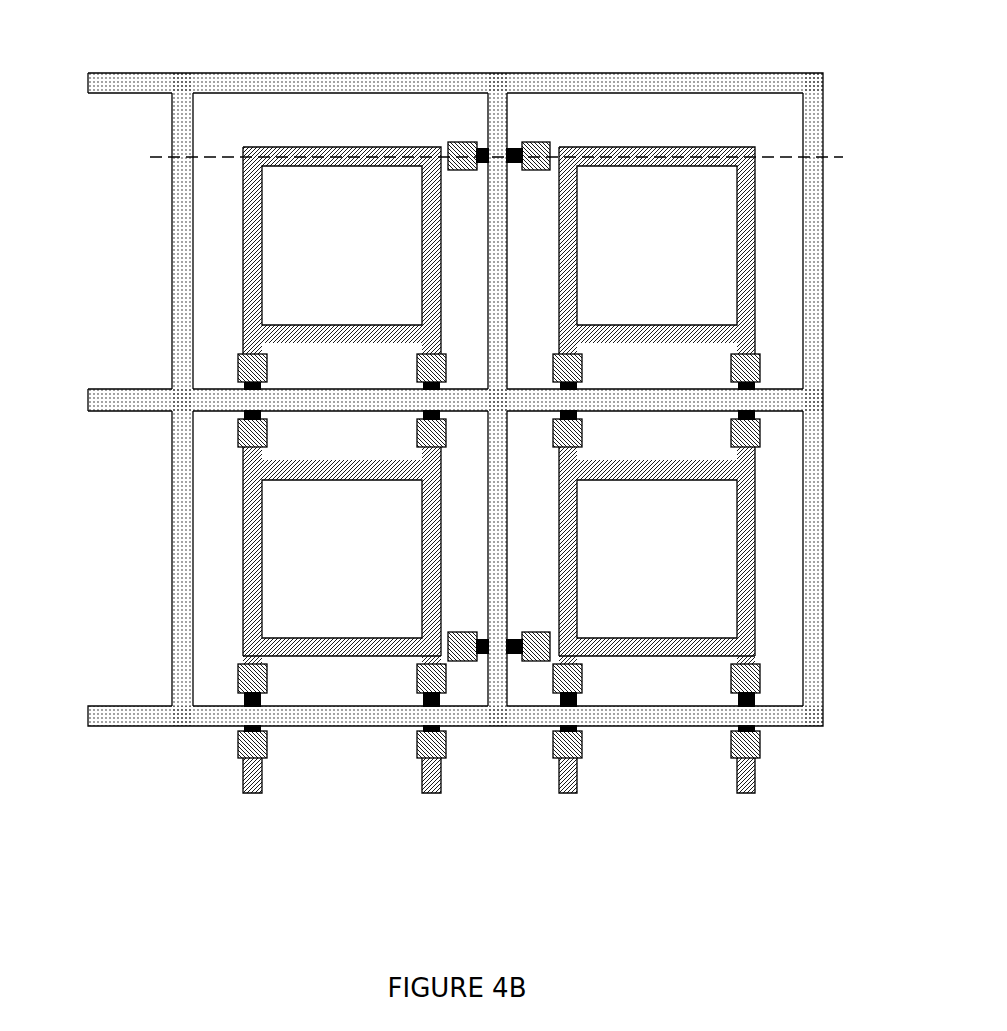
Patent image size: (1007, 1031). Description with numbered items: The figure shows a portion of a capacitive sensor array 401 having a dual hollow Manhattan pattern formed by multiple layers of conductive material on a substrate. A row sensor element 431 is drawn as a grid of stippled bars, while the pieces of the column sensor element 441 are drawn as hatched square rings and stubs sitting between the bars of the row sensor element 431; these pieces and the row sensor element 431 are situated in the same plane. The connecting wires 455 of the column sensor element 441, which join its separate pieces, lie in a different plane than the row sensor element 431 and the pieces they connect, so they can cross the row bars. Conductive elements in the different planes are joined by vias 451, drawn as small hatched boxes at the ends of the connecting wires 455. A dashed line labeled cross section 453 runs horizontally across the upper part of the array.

The capacitive sensor array 401 is at (482, 480).
The row sensor element 431 is at (624, 82).
The column sensor element 441 is at (760, 778).
The vias 451 is at (729, 743).
The cross section 453 is at (142, 157).
The connecting wires 455 is at (414, 698).